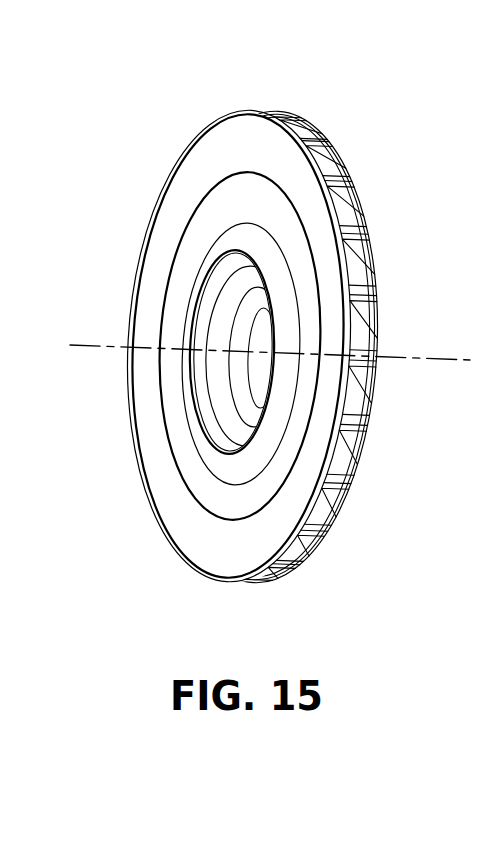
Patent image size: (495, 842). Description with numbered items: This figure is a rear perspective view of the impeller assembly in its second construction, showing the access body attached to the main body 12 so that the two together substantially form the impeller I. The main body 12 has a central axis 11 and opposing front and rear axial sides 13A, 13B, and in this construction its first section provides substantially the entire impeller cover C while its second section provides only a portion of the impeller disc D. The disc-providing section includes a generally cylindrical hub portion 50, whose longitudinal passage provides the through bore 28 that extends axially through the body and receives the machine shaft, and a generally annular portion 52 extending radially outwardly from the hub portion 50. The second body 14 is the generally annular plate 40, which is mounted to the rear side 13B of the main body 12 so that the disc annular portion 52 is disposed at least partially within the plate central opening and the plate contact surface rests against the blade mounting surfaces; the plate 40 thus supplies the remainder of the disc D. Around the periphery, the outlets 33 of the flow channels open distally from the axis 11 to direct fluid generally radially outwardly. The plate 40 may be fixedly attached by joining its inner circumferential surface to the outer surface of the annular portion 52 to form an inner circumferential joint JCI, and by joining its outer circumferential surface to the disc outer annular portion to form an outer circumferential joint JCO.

The central axis 11 is at (394, 358).
The main body 12 is at (370, 252).
The front axial side 13A is at (355, 213).
The rear axial side 13B is at (217, 160).
The second body 14 is at (147, 240).
The through bore 28 is at (230, 300).
The outlet 33 is at (342, 188).
The annular plate 40 is at (197, 533).
The hub portion 50 is at (183, 398).
The annular portion 52 is at (183, 447).
The impeller cover C is at (368, 192).
The impeller disc D is at (150, 203).
The impeller I is at (206, 76).
The inner circumferential joint JCI is at (173, 458).
The outer circumferential joint JCO is at (152, 516).